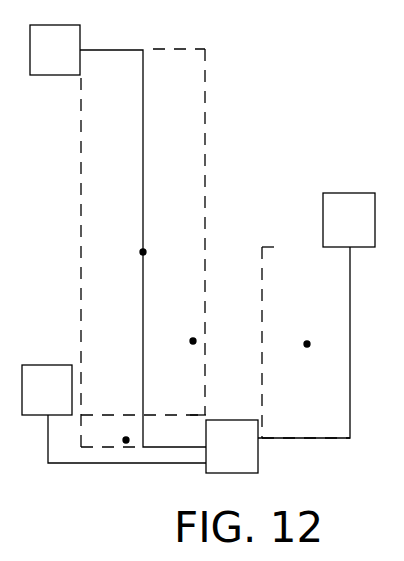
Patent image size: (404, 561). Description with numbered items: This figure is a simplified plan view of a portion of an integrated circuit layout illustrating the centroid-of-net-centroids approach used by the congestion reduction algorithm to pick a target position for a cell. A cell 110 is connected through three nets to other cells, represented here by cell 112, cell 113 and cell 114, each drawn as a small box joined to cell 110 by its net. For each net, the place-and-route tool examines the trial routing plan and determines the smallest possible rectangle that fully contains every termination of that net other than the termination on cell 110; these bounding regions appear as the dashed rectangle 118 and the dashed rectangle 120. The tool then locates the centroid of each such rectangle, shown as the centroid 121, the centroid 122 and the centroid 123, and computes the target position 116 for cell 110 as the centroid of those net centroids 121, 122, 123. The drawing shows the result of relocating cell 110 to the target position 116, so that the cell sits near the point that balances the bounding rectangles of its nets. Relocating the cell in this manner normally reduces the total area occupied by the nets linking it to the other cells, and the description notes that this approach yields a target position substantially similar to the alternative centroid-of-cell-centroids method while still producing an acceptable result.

The cell 110 is at (232, 446).
The cell 112 is at (316, 315).
The cell 113 is at (114, 414).
The cell 114 is at (55, 50).
The target position 116 is at (196, 337).
The rectangle 118 is at (205, 167).
The rectangle 120 is at (296, 326).
The centroid 121 is at (146, 249).
The centroid 122 is at (190, 415).
The centroid 123 is at (310, 339).